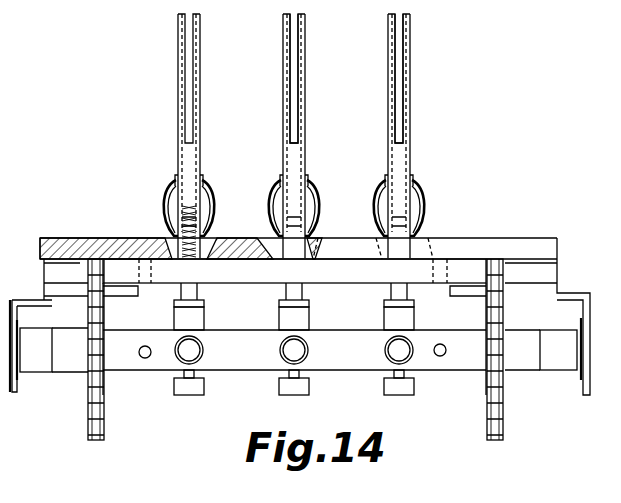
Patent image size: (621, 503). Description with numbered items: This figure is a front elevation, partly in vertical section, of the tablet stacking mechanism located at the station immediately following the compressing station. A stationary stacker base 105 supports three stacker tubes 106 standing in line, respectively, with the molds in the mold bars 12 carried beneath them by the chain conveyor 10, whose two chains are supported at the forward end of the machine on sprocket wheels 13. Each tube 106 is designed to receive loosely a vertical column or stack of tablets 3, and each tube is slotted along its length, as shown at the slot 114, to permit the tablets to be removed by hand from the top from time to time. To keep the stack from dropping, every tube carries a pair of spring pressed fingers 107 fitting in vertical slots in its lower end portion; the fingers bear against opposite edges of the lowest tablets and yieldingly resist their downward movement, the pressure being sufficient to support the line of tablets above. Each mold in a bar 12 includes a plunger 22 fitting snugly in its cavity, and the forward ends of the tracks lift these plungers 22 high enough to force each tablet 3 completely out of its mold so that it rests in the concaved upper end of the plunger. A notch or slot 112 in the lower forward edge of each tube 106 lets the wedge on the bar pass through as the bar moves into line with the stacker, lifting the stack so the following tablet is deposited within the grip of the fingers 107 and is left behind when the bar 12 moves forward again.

The stacker tube 106 is at (197, 92).
The slot in plunger rod 114 is at (306, 128).
The tablet 3 is at (196, 214).
The notch or slot 112 is at (313, 237).
The spring pressed fingers 107 is at (158, 243).
The stacker base 105 is at (535, 240).
The mold bar 12 is at (463, 267).
The plunger 22 is at (385, 300).
The chain conveyor 10 is at (88, 395).
The sprocket wheels 13 is at (97, 441).